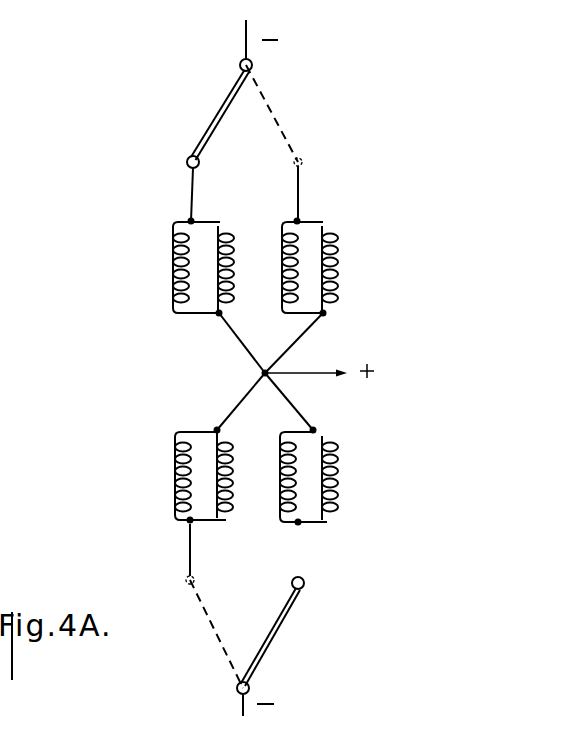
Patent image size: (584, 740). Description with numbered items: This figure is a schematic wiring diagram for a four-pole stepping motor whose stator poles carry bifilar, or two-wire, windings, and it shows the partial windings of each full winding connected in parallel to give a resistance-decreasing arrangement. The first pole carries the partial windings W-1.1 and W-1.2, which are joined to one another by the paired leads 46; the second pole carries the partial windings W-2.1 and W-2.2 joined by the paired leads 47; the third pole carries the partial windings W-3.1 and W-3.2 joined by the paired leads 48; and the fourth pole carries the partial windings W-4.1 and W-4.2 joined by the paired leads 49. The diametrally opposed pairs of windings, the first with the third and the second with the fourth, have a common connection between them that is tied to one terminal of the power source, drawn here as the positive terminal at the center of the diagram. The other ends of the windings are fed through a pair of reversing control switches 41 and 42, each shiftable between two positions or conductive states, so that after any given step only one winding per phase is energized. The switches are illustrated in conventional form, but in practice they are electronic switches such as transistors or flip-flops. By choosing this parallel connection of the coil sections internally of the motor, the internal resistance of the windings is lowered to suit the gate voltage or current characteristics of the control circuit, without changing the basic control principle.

The reversing control switch 41 is at (220, 113).
The reversing control switch 42 is at (278, 622).
The paired leads 46 is at (200, 221).
The paired leads 47 is at (206, 428).
The paired leads 48 is at (325, 222).
The paired leads 49 is at (324, 430).
The partial winding W-1.1 is at (172, 272).
The partial winding W-1.2 is at (228, 233).
The partial winding W-2.1 is at (172, 495).
The partial winding W-2.2 is at (238, 494).
The partial winding W-3.1 is at (342, 268).
The partial winding W-3.2 is at (298, 232).
The partial winding W-4.1 is at (341, 508).
The partial winding W-4.2 is at (283, 448).